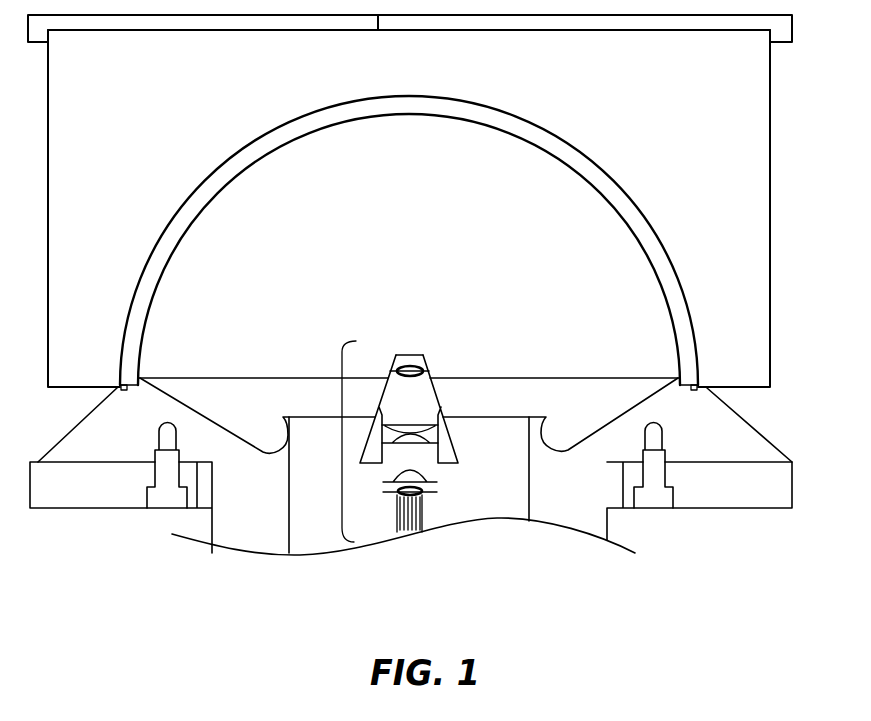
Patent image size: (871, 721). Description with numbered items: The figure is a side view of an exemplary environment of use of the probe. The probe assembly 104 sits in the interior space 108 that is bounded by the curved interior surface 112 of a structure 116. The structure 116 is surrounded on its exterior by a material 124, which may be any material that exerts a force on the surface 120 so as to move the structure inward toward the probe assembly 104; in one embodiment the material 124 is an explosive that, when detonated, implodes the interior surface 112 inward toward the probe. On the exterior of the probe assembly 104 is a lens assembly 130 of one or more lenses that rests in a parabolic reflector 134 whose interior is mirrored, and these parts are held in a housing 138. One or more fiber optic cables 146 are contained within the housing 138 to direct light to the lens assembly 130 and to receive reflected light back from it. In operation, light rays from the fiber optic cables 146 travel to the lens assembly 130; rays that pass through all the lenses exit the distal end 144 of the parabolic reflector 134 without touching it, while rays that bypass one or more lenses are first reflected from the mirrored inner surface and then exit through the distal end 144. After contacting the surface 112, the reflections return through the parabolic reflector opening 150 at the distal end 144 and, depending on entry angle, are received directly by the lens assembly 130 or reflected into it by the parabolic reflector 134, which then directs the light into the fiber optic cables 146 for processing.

The probe assembly 104 is at (341, 398).
The interior space 108 is at (616, 262).
The curved interior surface 112 is at (610, 193).
The structure 116 is at (538, 139).
The surface 120 is at (462, 100).
The material 124 is at (736, 120).
The lens assembly 130 is at (366, 492).
The parabolic reflector 134 is at (433, 368).
The housing 138 is at (437, 485).
The distal end 144 is at (376, 330).
The fiber optic cables 146 is at (412, 527).
The parabolic reflector opening 150 is at (413, 354).